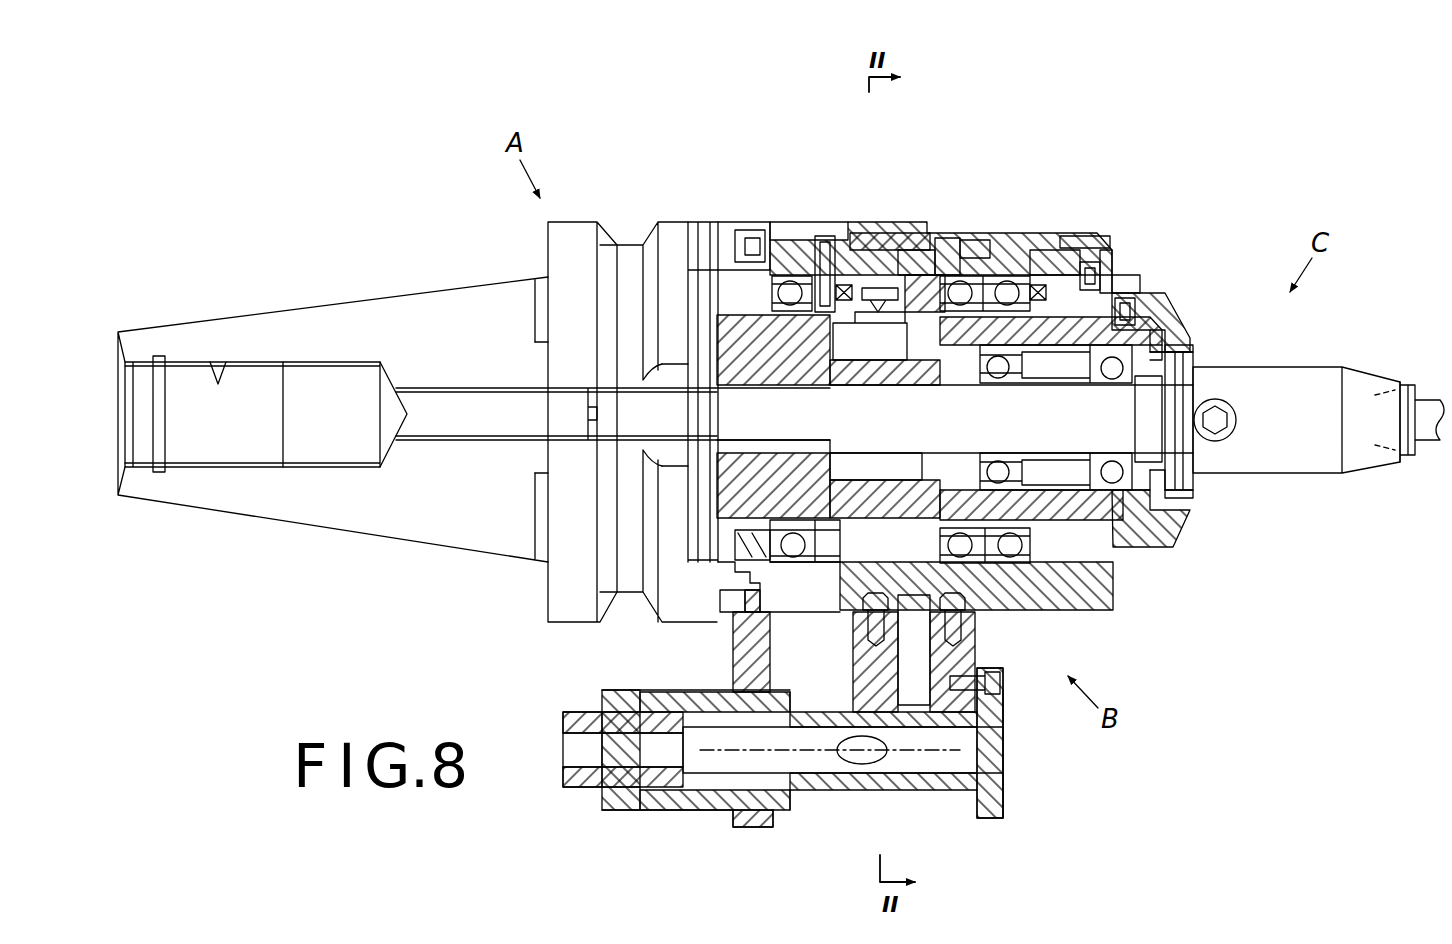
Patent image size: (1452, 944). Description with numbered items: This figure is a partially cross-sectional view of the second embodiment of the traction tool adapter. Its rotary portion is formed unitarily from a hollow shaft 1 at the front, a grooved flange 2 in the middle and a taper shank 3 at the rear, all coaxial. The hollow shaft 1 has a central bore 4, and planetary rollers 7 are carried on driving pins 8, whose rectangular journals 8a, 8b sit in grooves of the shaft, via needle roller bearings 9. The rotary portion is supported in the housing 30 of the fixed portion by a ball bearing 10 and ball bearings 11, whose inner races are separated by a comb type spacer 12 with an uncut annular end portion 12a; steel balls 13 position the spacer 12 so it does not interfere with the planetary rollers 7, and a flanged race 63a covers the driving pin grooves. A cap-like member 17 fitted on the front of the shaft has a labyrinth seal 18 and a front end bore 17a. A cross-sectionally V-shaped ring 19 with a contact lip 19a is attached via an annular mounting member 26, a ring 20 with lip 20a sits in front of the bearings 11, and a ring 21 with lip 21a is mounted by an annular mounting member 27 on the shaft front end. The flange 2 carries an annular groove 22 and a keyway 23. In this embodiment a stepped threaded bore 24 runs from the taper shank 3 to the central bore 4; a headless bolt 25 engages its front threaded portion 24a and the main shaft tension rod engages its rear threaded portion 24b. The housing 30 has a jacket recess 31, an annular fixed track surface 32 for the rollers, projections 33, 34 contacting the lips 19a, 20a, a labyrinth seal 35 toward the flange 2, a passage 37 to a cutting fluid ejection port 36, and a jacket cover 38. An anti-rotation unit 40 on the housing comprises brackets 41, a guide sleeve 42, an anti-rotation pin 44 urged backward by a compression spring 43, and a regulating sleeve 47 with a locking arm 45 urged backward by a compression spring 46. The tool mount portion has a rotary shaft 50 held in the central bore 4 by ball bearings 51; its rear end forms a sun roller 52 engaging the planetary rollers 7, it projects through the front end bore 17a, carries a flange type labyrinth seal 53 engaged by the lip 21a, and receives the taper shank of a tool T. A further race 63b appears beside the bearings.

The hollow shaft 1 is at (1068, 327).
The grooved flange 2 is at (576, 237).
The taper shank 3 is at (300, 330).
The central bore 4 is at (857, 477).
The planetary roller 7 is at (922, 275).
The driving pin 8 is at (832, 238).
The journal 8a is at (952, 238).
The journal 8b is at (773, 236).
The needle roller bearing 9 is at (880, 320).
The ball bearing 10 is at (793, 557).
The ball bearing 11 is at (1010, 234).
The comb type spacer 12 is at (812, 240).
The annular end portion 12a is at (983, 240).
The steel ball 13 is at (860, 600).
The cap-like member 17 is at (1172, 306).
The front end bore 17a is at (1195, 340).
The labyrinth seal 18 is at (1128, 298).
The cross-sectionally V-shaped ring 19 is at (780, 598).
The contact lip 19a is at (706, 218).
The cross-sectionally V-shaped ring 20 is at (1112, 255).
The contact lip 20a is at (1100, 262).
The cross-sectionally V-shaped ring 21 is at (1193, 505).
The contact lip 21a is at (1195, 490).
The annular groove 22 is at (630, 240).
The keyway 23 is at (596, 375).
The stepped threaded bore 24 is at (118, 382).
The front threaded portion 24a is at (470, 408).
The rear threaded portion 24b is at (218, 382).
The headless bolt 25 is at (628, 413).
The annular mounting member 26 is at (720, 558).
The annular mounting member 27 is at (1170, 548).
The housing 30 is at (1000, 660).
The jacket recess 31 is at (887, 233).
The annular fixed track surface 32 is at (874, 288).
The projection 33 is at (735, 222).
The projection 34 is at (1085, 236).
The labyrinth seal 35 is at (740, 592).
The cutting fluid ejection port 36 is at (1135, 275).
The passage 37 is at (1040, 252).
The jacket cover 38 is at (920, 250).
The anti-rotation unit 40 is at (1010, 782).
The bracket 41 is at (935, 675).
The guide sleeve 42 is at (915, 800).
The compression spring 43 is at (985, 792).
The anti-rotation pin 44 is at (582, 778).
The locking arm 45 is at (748, 660).
The compression spring 46 is at (800, 812).
The regulating sleeve 47 is at (630, 808).
The rotary shaft 50 is at (1292, 462).
The ball bearing 51 is at (1130, 560).
The sun roller 52 is at (1010, 560).
The flange type labyrinth seal 53 is at (1195, 360).
The flanged race 63a is at (836, 290).
The cross key 63b is at (1035, 286).
The tool T is at (1406, 388).